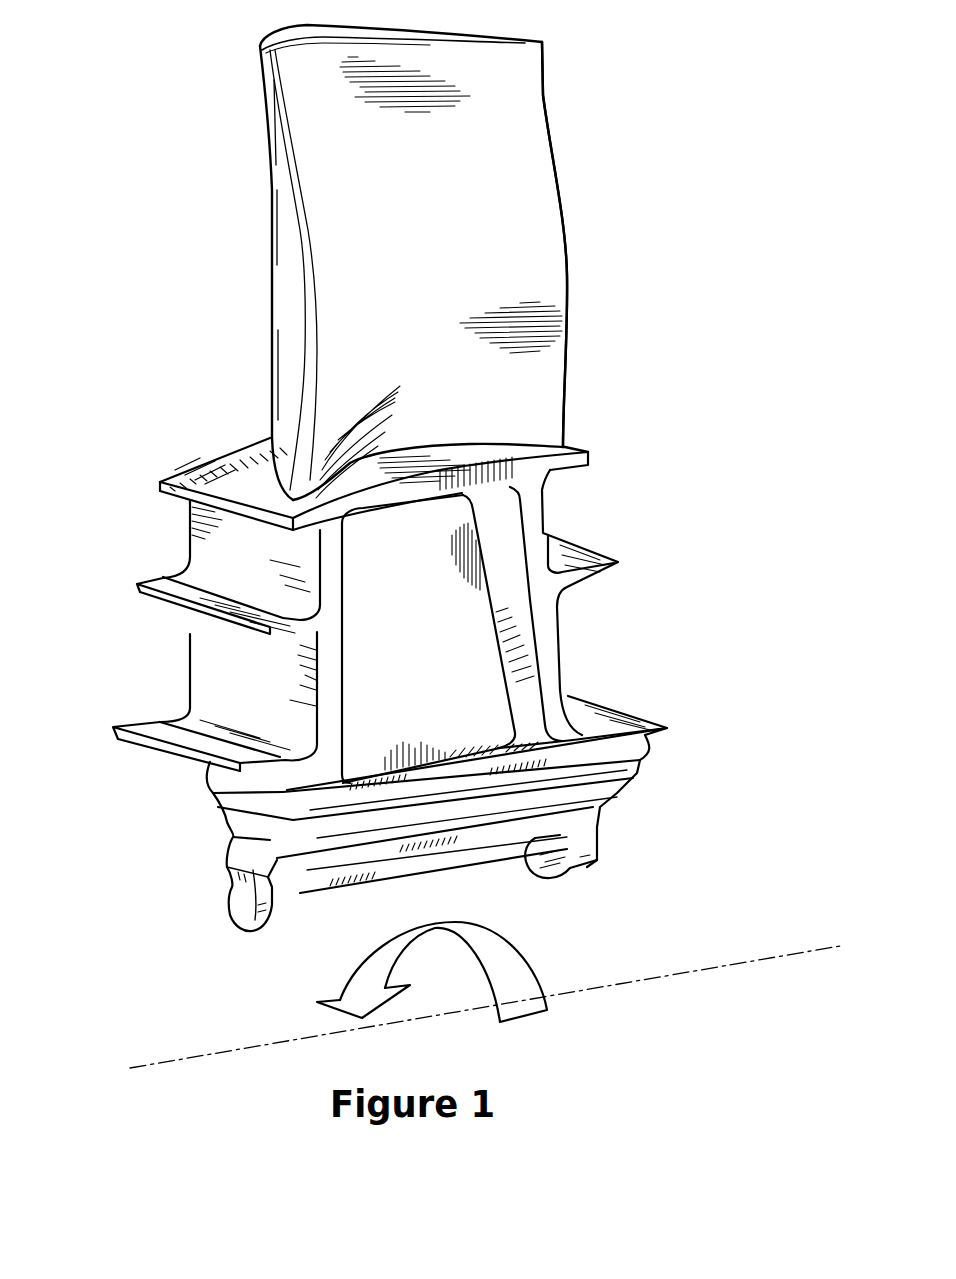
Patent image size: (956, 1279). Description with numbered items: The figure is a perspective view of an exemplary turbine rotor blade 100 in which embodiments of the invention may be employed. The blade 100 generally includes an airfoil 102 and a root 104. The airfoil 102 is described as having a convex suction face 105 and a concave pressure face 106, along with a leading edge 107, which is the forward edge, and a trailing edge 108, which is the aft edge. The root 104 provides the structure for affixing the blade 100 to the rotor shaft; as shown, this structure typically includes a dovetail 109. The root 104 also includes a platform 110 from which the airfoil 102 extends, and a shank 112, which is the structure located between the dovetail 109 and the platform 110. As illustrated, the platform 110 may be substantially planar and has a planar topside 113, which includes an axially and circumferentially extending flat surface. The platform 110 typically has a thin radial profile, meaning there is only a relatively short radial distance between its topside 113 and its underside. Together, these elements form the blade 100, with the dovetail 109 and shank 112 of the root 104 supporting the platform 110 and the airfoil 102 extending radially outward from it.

The turbine rotor blade 100 is at (690, 310).
The airfoil 102 is at (522, 132).
The root 104 is at (672, 810).
The convex suction face 105 is at (250, 194).
The concave pressure face 106 is at (458, 311).
The leading edge 107 is at (298, 350).
The trailing edge 108 is at (563, 207).
The dovetail 109 is at (238, 913).
The platform 110 is at (200, 470).
The shank 112 is at (122, 663).
The planar topside 113 is at (267, 491).